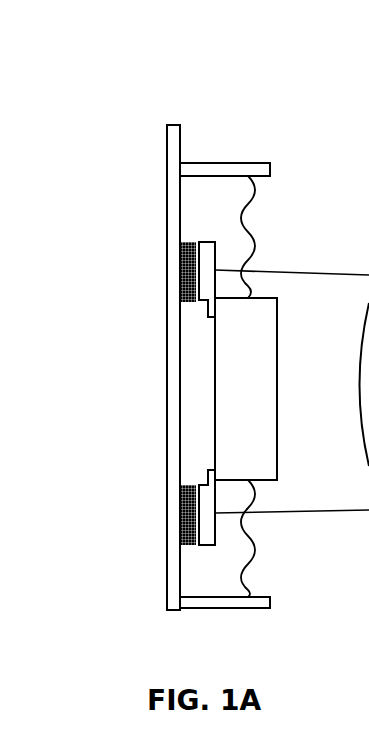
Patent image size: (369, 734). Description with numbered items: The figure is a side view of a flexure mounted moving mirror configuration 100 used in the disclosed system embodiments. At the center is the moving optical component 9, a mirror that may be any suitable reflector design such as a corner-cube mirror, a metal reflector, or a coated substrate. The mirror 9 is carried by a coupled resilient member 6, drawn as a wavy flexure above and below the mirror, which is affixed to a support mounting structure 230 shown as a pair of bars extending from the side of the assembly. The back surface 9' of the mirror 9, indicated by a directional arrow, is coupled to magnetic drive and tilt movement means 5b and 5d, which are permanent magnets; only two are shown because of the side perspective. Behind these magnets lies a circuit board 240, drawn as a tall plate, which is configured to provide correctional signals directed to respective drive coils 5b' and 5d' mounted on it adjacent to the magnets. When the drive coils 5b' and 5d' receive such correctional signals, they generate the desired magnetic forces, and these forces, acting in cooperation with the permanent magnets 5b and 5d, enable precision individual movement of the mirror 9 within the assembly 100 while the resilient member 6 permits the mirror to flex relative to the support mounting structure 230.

The flexure mounted moving mirror configuration 100 is at (165, 54).
The circuit board 240 is at (167, 143).
The support mounting structure 230 is at (236, 163).
The moving optical component 9 is at (246, 389).
The back surface 9' is at (164, 389).
The magnetic drive and tilt movement means 5b is at (215, 252).
The drive coil 5b' is at (155, 305).
The magnetic drive and tilt movement means 5d is at (215, 532).
The drive coil 5d' is at (154, 485).
The resilient member 6 is at (252, 242).